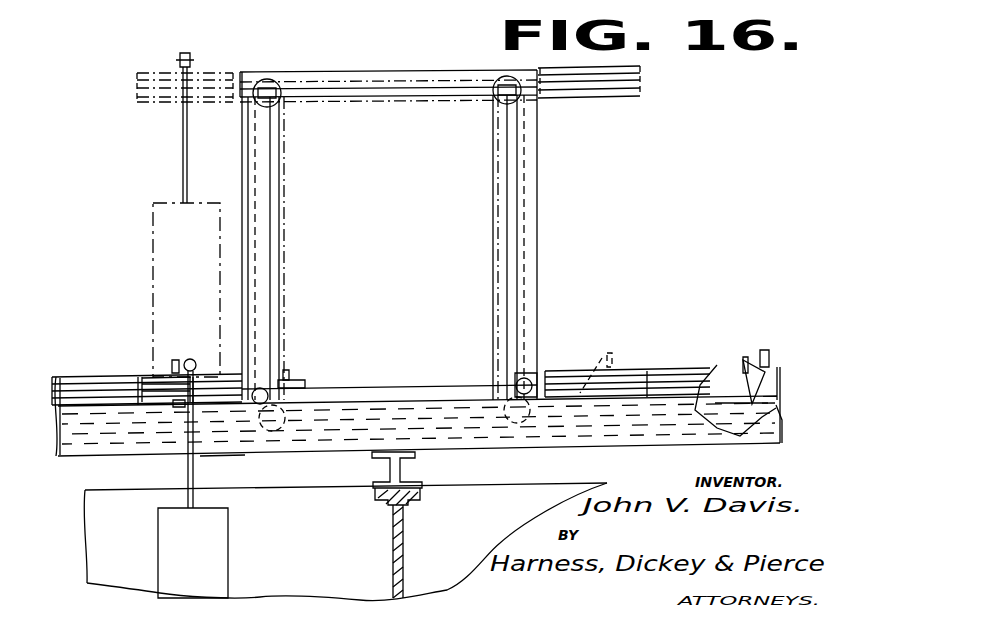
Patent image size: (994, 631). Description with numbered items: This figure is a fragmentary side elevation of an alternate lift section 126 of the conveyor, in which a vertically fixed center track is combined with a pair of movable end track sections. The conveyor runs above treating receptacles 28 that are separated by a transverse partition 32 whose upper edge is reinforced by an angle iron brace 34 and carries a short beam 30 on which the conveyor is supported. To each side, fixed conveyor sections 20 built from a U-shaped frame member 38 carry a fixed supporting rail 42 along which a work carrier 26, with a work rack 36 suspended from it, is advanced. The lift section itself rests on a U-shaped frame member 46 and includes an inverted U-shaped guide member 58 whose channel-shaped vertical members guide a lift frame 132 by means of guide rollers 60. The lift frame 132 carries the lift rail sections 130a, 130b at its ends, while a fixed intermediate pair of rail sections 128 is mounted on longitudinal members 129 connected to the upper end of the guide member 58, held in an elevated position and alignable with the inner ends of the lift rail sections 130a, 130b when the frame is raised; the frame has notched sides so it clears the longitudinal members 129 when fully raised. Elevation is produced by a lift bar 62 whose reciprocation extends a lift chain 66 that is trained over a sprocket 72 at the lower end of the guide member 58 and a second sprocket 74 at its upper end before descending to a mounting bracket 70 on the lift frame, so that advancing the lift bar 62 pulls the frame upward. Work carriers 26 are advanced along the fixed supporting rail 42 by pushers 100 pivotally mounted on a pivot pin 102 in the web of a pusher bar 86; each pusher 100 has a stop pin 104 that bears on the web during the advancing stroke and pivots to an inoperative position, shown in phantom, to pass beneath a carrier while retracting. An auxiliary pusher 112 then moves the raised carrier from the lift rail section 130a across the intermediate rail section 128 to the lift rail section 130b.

The fixed conveyor section 20 is at (58, 373).
The work carrier 26 is at (192, 62).
The treating receptacle 28 is at (352, 576).
The short beam 30 is at (403, 473).
The transverse partition 32 is at (397, 537).
The angle iron brace 34 is at (387, 493).
The work rack 36 is at (158, 268).
The U-shaped frame member 38 is at (62, 458).
The fixed supporting rail 42 is at (100, 380).
The U-shaped frame member 46 is at (222, 448).
The inverted U-shaped guide member 58 is at (517, 242).
The guide roller 60 is at (298, 372).
The lift bar 62 is at (512, 450).
The lift chain 66 is at (493, 197).
The mounting bracket 70 is at (298, 383).
The sprocket 72 is at (280, 448).
The second sprocket 74 is at (282, 78).
The pusher bar 86 is at (110, 457).
The pusher 100 is at (172, 366).
The pivot pin 102 is at (770, 382).
The stop pin 104 is at (717, 390).
The auxiliary pusher 112 is at (172, 70).
The lift section 126 is at (540, 164).
The intermediate rail section 128 is at (345, 75).
The longitudinal member 129 is at (397, 92).
The lift rail section 130a is at (137, 80).
The lift rail section 130b is at (535, 70).
The lift frame 132 is at (150, 102).